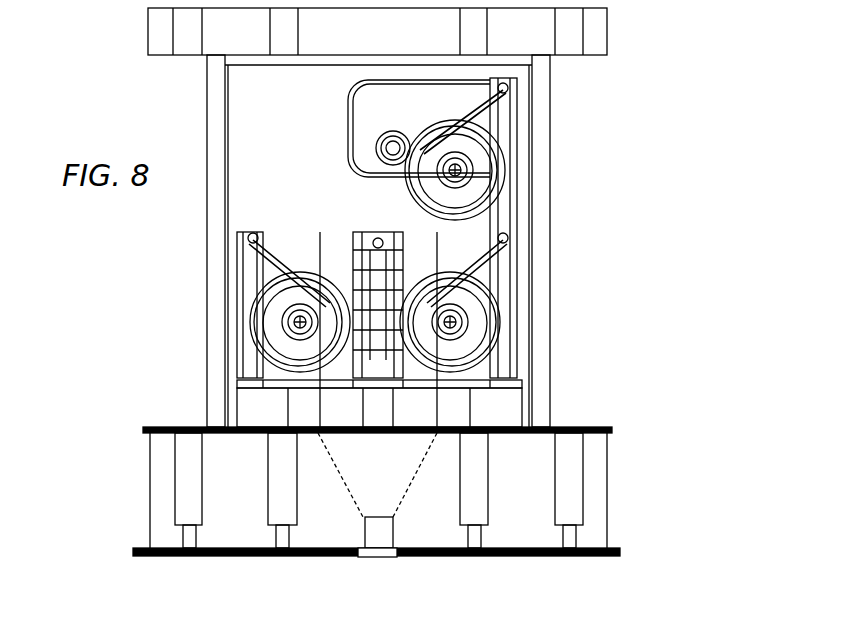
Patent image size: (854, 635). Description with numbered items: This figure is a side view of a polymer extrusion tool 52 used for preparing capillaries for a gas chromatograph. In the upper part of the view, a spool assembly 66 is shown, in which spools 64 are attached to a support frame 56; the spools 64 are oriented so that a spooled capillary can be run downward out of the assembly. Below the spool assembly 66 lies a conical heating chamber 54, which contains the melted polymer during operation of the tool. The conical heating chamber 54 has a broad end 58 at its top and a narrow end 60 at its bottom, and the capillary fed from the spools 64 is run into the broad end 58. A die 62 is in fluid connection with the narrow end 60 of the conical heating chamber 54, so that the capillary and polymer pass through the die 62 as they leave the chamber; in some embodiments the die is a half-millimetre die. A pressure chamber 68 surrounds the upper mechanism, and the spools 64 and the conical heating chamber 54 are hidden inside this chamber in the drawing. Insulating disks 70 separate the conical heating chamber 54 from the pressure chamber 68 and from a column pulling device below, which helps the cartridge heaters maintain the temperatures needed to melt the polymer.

The polymer extrusion tool 52 is at (383, 217).
The conical heating chamber 54 is at (383, 518).
The support frame 56 is at (503, 357).
The broad end 58 is at (343, 427).
The narrow end 60 is at (395, 550).
The die 62 is at (365, 532).
The spool 64 is at (483, 122).
The spool assembly 66 is at (438, 252).
The pressure chamber 68 is at (208, 123).
The insulating disk 70 is at (612, 430).